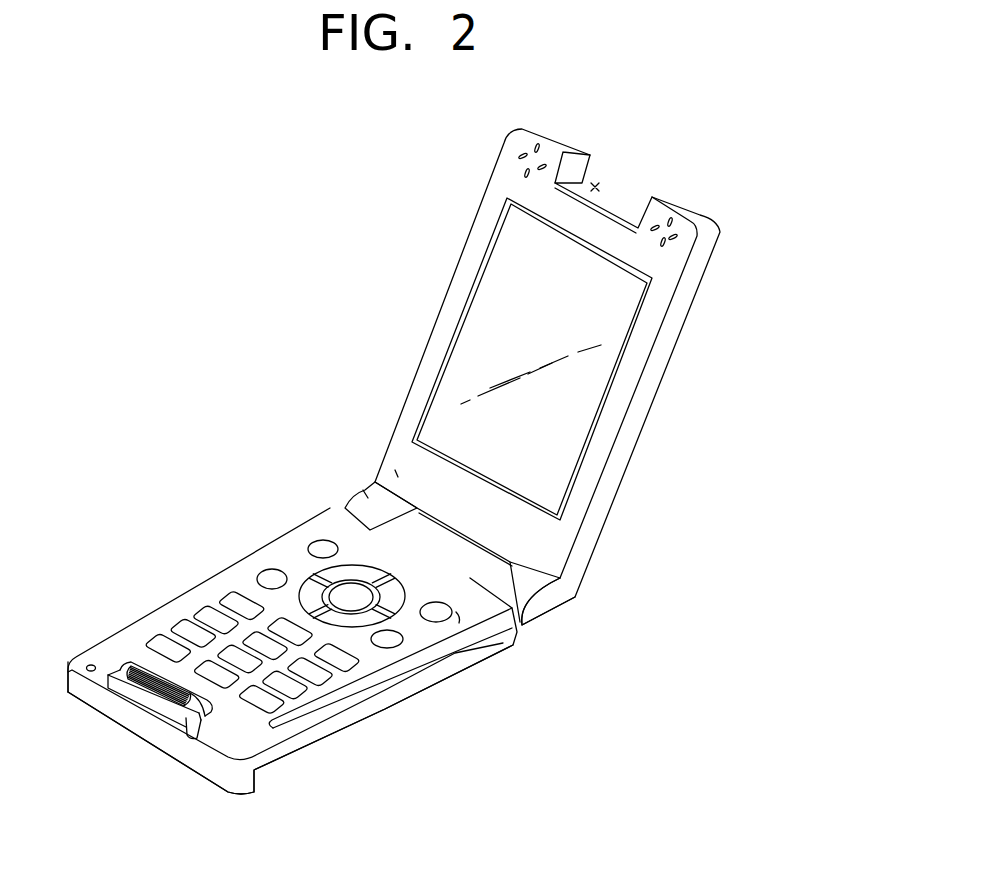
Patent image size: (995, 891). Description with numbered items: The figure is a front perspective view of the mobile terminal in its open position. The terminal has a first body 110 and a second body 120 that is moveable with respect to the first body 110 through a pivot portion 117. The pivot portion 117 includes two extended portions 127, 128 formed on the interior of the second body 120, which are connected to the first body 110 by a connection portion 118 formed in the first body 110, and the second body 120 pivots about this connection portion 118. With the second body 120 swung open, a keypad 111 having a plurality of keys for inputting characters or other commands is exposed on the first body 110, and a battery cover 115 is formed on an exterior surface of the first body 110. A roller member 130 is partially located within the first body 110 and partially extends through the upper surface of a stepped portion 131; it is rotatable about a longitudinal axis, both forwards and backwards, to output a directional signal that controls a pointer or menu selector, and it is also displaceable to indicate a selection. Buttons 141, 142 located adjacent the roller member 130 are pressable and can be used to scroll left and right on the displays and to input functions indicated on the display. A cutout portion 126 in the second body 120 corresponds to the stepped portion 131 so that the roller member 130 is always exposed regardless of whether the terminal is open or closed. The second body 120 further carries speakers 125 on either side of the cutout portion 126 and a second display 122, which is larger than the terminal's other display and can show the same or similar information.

The first body 110 is at (511, 642).
The keypad 111 is at (380, 676).
The battery cover 115 is at (312, 743).
The pivot portion 117 is at (242, 372).
The connection portion 118 is at (442, 548).
The second body 120 is at (673, 363).
The second display 122 is at (497, 298).
The speakers 125 is at (658, 228).
The cutout portion 126 is at (555, 183).
The extended portion 127 is at (410, 442).
The extended portion 128 is at (517, 578).
The roller member 130 is at (150, 690).
The stepped portion 131 is at (198, 712).
The button 141 is at (110, 686).
The button 142 is at (175, 706).